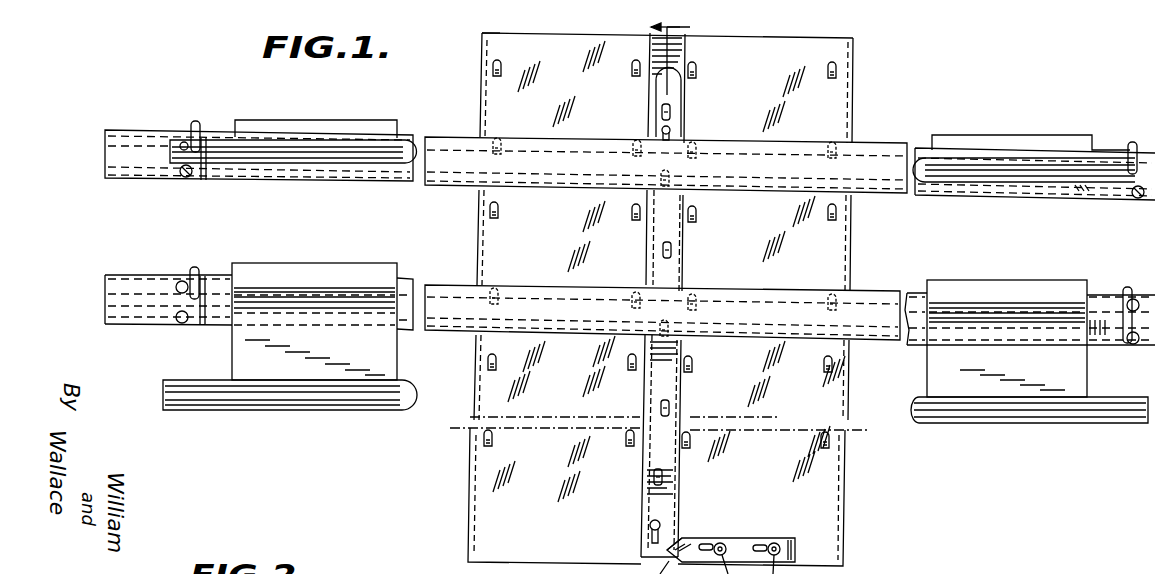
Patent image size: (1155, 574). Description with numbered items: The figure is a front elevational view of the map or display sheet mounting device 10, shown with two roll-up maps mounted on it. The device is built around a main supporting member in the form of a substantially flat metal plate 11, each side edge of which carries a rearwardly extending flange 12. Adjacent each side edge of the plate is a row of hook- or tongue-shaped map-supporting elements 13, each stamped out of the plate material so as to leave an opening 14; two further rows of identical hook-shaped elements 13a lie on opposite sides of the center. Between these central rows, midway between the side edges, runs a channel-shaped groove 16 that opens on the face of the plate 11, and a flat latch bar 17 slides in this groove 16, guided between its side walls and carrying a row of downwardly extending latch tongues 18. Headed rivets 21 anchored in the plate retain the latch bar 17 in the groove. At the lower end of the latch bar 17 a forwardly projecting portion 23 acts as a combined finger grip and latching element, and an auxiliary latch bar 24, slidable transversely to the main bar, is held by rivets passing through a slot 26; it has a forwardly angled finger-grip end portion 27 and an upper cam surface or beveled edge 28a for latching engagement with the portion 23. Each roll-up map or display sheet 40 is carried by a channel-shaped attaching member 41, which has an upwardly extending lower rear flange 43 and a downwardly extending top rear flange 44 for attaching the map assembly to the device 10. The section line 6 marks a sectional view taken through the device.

The section line 6 is at (679, 56).
The map or display sheet mounting device 10 is at (855, 127).
The main supporting member or plate 11 is at (815, 110).
The rearwardly extending flange 12 is at (470, 502).
The map-supporting elements 13 is at (493, 70).
The hook-shaped map supporting elements 13a is at (630, 76).
The opening 14 is at (498, 58).
The channel-shaped groove 16 is at (673, 60).
The latch bar 17 is at (672, 92).
The latch elements or tongues 18 is at (672, 115).
The headed rivets 21 is at (662, 130).
The forwardly projecting portion 23 is at (655, 556).
The auxiliary latch bar 24 is at (740, 545).
The slot 26 is at (710, 544).
The forwardly angled end portion 27 is at (797, 553).
The upper cam surface or beveled edge 28a is at (686, 540).
The roll-up map or display sheet 40 is at (355, 128).
The channel-shaped attaching member 41 is at (447, 145).
The lower rear flange 43 is at (905, 197).
The top rear flange 44 is at (905, 145).